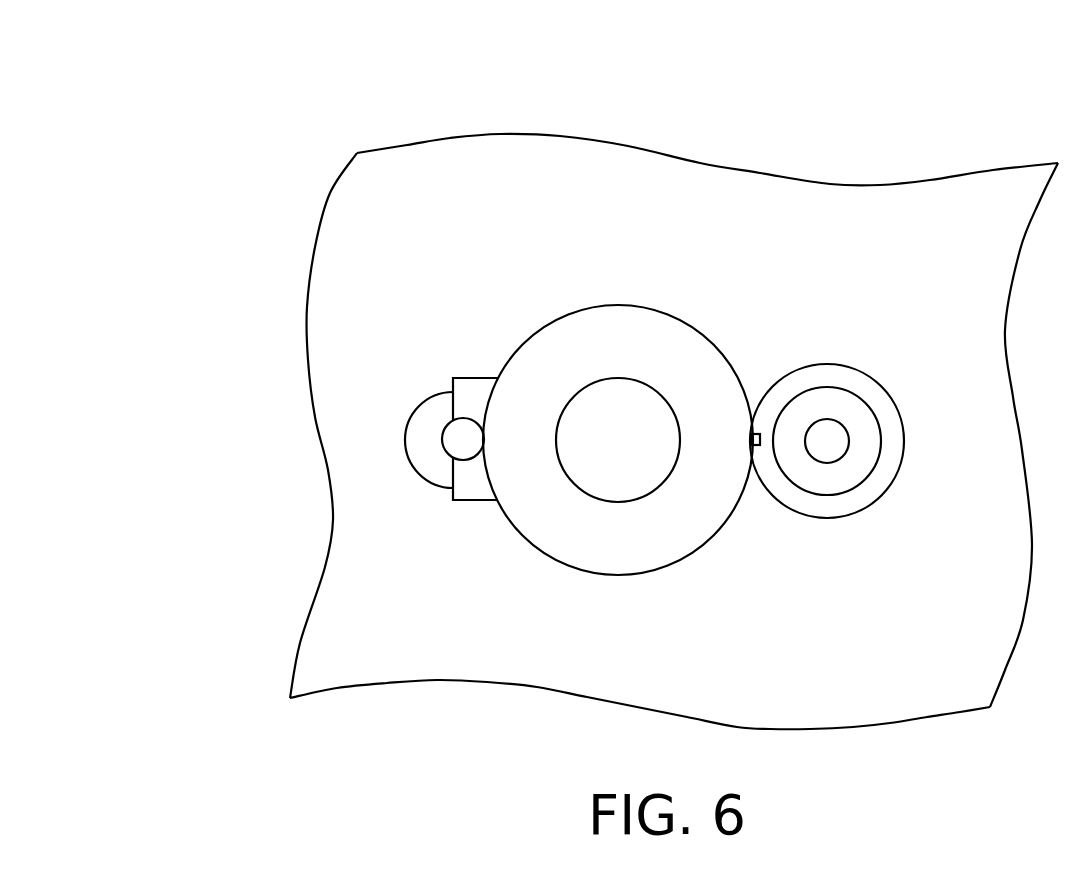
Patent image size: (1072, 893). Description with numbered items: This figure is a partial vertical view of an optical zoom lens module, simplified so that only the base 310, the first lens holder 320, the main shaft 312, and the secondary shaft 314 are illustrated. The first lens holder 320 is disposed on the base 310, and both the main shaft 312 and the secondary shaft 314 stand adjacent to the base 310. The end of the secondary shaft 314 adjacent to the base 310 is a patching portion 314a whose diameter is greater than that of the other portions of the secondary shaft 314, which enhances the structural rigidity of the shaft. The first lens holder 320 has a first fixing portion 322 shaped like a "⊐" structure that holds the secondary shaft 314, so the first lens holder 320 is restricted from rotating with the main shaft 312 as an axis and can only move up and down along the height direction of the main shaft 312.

The base 310 is at (408, 200).
The main shaft 312 is at (827, 437).
The secondary shaft 314 is at (470, 442).
The patching portion 314a is at (430, 415).
The first lens holder 320 is at (620, 322).
The first fixing portion 322 is at (481, 398).